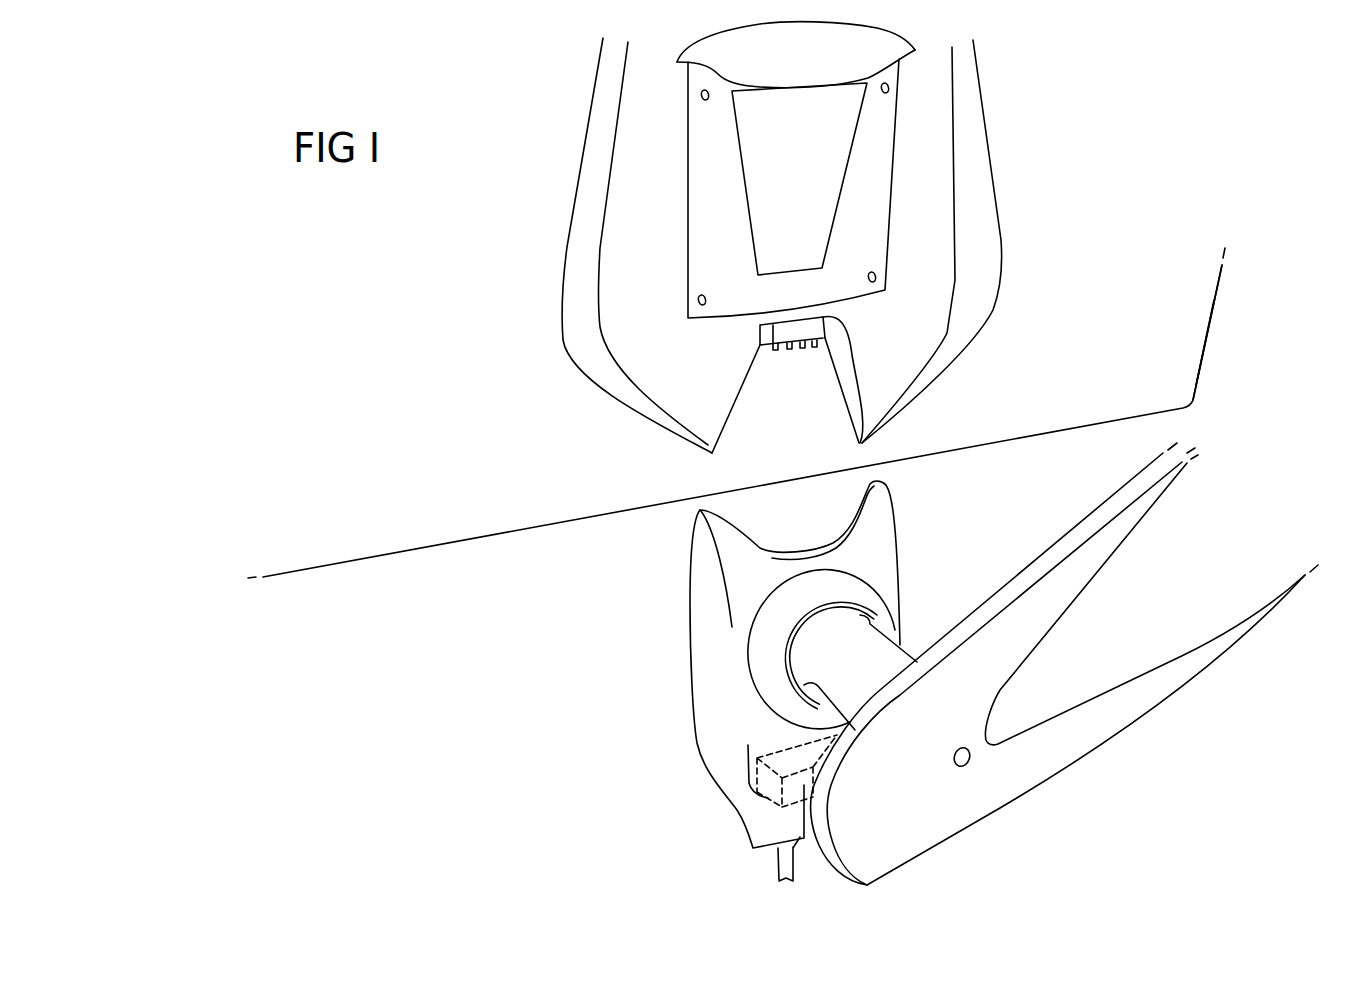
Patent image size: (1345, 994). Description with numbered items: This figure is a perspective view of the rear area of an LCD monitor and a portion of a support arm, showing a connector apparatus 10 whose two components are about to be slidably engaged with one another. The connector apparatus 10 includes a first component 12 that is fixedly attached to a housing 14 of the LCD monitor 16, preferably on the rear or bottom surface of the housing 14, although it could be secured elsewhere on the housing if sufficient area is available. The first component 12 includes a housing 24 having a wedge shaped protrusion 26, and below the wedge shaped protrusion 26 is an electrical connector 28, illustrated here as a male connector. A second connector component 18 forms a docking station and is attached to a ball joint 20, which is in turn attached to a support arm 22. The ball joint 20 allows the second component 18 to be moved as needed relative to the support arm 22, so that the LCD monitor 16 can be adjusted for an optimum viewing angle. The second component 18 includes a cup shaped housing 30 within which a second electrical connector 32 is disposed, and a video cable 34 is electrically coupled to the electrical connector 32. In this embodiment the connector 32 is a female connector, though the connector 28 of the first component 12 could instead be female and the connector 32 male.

The connector apparatus 10 is at (707, 546).
The first component 12 is at (791, 242).
The housing 14 is at (1168, 302).
The LCD monitor 16 is at (1222, 356).
The second connector component 18 is at (775, 682).
The ball joint 20 is at (883, 663).
The support arm 22 is at (957, 822).
The housing 24 is at (627, 242).
The wedge shaped protrusion 26 is at (823, 223).
The electrical connector 28 is at (802, 333).
The cup shaped housing 30 is at (727, 770).
The second electrical connector 32 is at (783, 780).
The video cable 34 is at (777, 863).